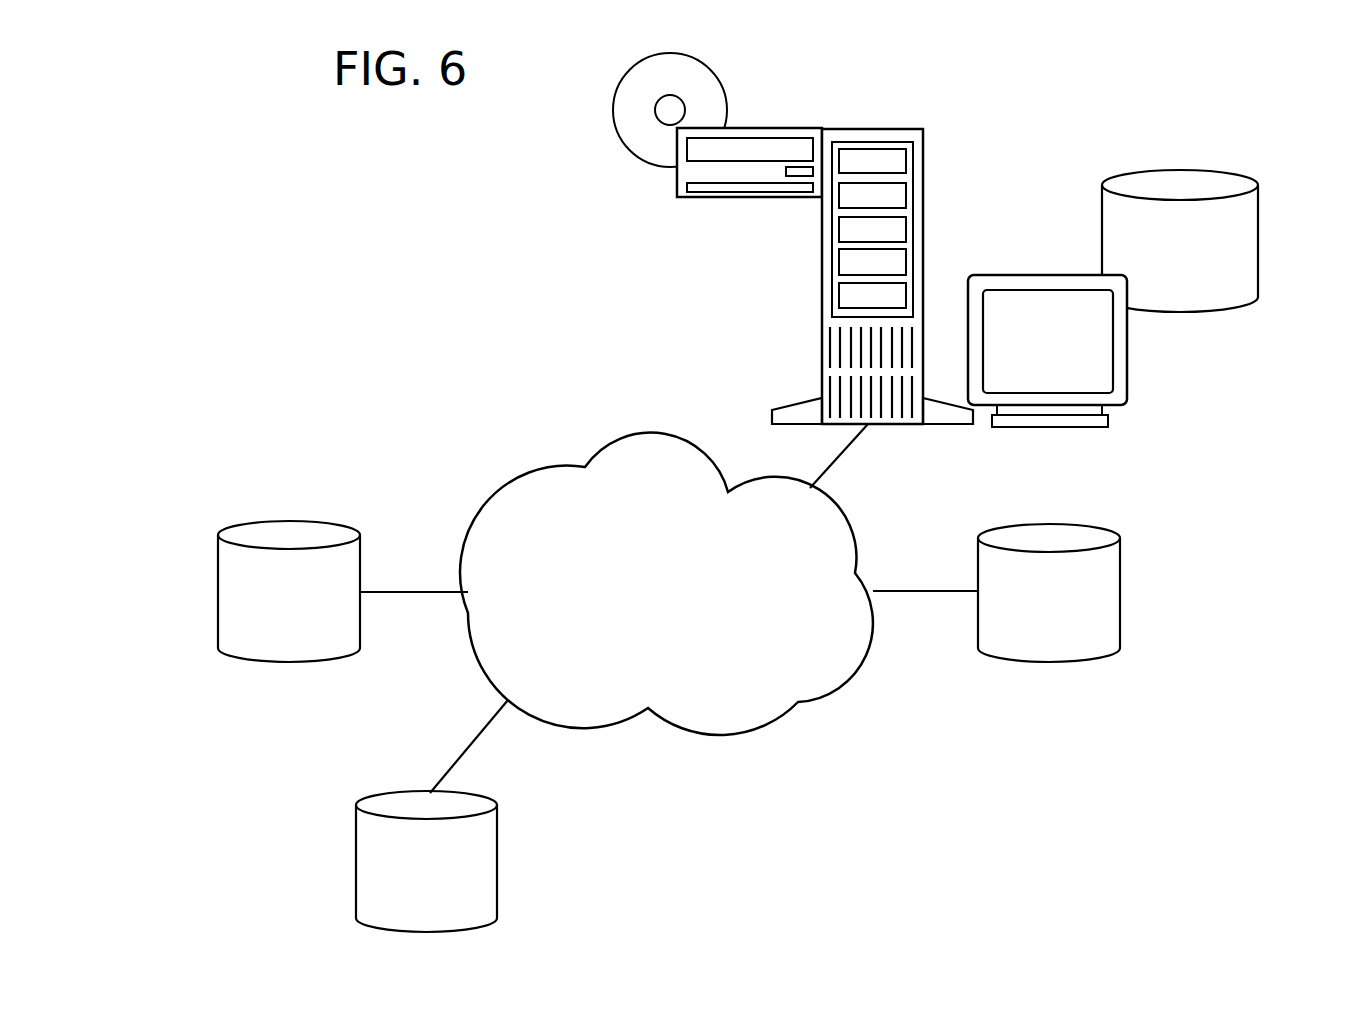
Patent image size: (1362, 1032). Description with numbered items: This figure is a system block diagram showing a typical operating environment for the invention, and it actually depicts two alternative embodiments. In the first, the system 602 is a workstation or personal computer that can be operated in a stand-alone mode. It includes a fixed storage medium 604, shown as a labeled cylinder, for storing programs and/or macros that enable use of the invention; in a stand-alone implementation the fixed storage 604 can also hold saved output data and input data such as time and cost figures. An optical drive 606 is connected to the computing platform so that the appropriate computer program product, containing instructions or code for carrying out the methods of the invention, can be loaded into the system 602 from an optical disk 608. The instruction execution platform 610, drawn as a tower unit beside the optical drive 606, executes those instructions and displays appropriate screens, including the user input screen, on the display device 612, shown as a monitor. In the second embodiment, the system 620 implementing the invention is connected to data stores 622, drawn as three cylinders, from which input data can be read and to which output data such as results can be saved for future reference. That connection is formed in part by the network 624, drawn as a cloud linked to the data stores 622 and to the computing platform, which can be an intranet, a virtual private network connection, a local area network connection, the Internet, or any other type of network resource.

The system 602 is at (1279, 376).
The fixed storage medium 604 is at (1223, 172).
The optical drive 606 is at (695, 197).
The optical disk 608 is at (616, 137).
The instruction execution platform 610 is at (927, 143).
The display device 612 is at (1125, 338).
The system 620 is at (611, 524).
The data stores 622 is at (218, 533).
The network 624 is at (530, 482).